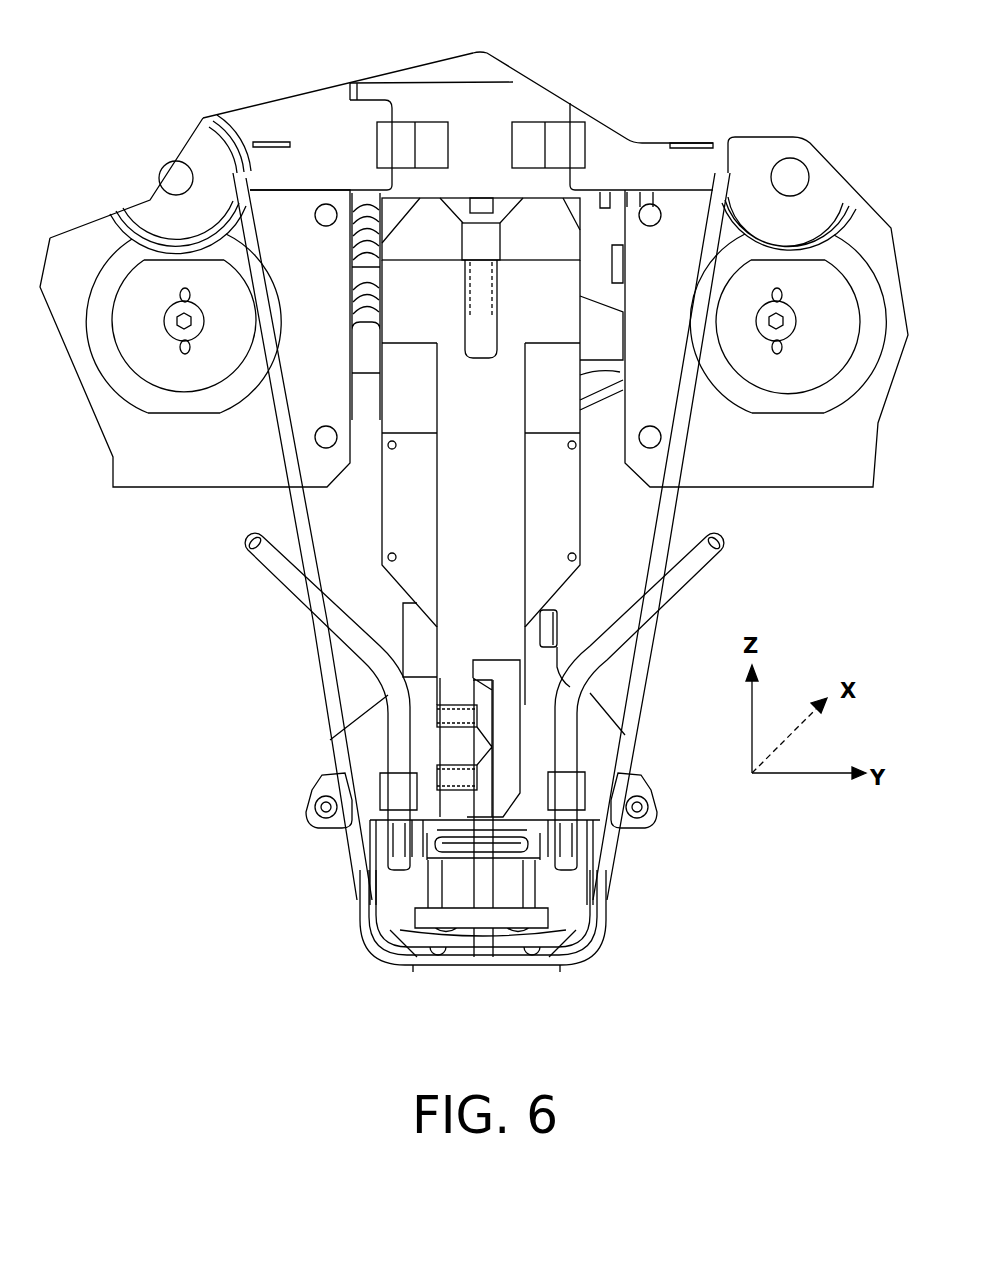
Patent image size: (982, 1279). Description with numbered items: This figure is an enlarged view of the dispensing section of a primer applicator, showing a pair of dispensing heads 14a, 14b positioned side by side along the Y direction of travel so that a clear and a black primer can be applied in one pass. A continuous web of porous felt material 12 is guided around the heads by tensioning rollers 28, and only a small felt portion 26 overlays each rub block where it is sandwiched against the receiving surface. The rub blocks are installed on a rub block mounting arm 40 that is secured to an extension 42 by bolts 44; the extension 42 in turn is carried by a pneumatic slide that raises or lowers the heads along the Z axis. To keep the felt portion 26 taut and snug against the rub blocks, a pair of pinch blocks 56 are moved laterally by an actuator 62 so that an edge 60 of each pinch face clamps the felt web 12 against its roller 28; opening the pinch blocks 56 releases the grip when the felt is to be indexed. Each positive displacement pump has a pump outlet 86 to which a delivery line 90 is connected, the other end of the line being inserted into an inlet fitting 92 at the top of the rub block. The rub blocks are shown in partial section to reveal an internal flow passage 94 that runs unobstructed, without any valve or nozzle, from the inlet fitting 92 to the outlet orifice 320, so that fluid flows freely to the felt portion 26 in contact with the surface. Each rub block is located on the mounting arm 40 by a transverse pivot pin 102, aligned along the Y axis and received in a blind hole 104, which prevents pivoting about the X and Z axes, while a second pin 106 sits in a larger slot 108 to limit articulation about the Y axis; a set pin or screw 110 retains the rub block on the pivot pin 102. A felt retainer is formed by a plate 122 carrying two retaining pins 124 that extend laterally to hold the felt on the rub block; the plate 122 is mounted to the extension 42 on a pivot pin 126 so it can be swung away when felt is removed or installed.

The porous material 12 is at (313, 660).
The dispensing head 14a is at (400, 973).
The dispensing head 14b is at (577, 973).
The felt portion 26 is at (412, 972).
The tensioning roller 28 is at (157, 207).
The rub block mounting arm 40 is at (480, 900).
The extension 42 is at (497, 494).
The bolt 44 is at (458, 715).
The pinch block 56 is at (292, 113).
The edge 60 is at (235, 178).
The actuator 62 is at (433, 137).
The pump outlet 86 is at (247, 545).
The delivery line 90 is at (277, 577).
The inlet fitting 92 is at (378, 780).
The internal flow passage 94 is at (398, 915).
The pivot pin 102 is at (398, 948).
The blind hole 104 is at (390, 958).
The pin 106 is at (440, 838).
The slot 108 is at (443, 867).
The set pin or screw 110 is at (447, 880).
The plate 122 is at (413, 630).
The retaining pin 124 is at (315, 806).
The pivot pin 126 is at (550, 627).
The outlet orifice 320 is at (440, 958).